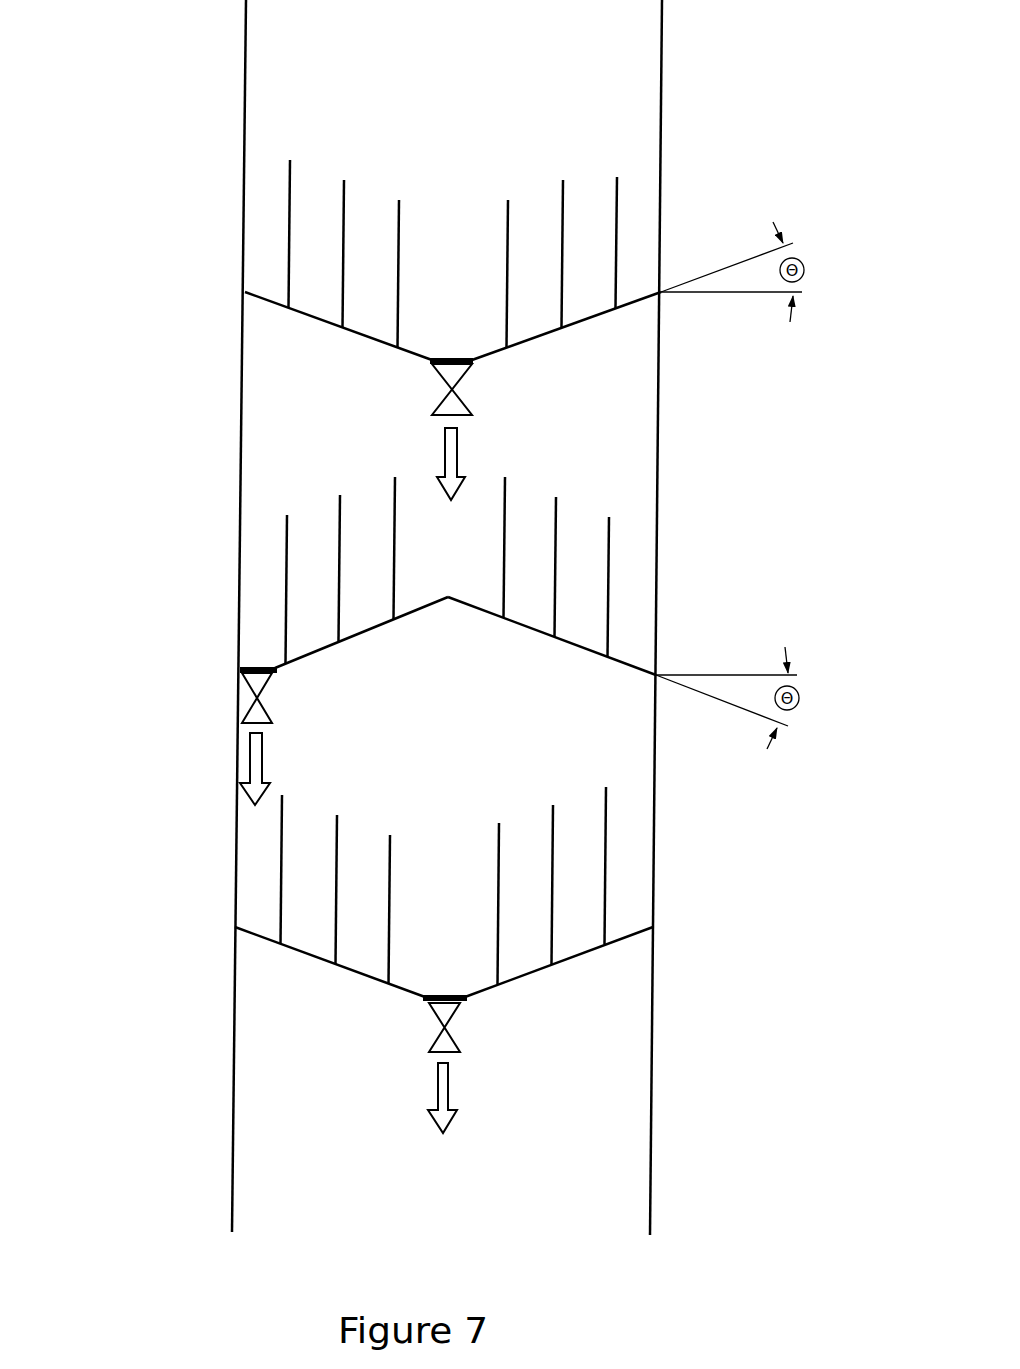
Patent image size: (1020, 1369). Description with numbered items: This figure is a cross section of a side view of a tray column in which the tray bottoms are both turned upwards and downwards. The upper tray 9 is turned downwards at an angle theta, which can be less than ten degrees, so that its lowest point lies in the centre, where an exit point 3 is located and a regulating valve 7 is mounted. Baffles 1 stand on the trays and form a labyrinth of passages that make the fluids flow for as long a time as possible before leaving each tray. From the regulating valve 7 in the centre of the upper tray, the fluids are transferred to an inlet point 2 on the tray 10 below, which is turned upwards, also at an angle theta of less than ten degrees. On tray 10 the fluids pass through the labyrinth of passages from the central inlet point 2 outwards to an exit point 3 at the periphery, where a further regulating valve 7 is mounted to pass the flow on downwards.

The baffles 1 is at (508, 210).
The inlet point 2 is at (448, 597).
The exit point 3 is at (440, 362).
The regulating valve 7 is at (440, 383).
The tray 9 is at (583, 320).
The tray 10 is at (582, 645).